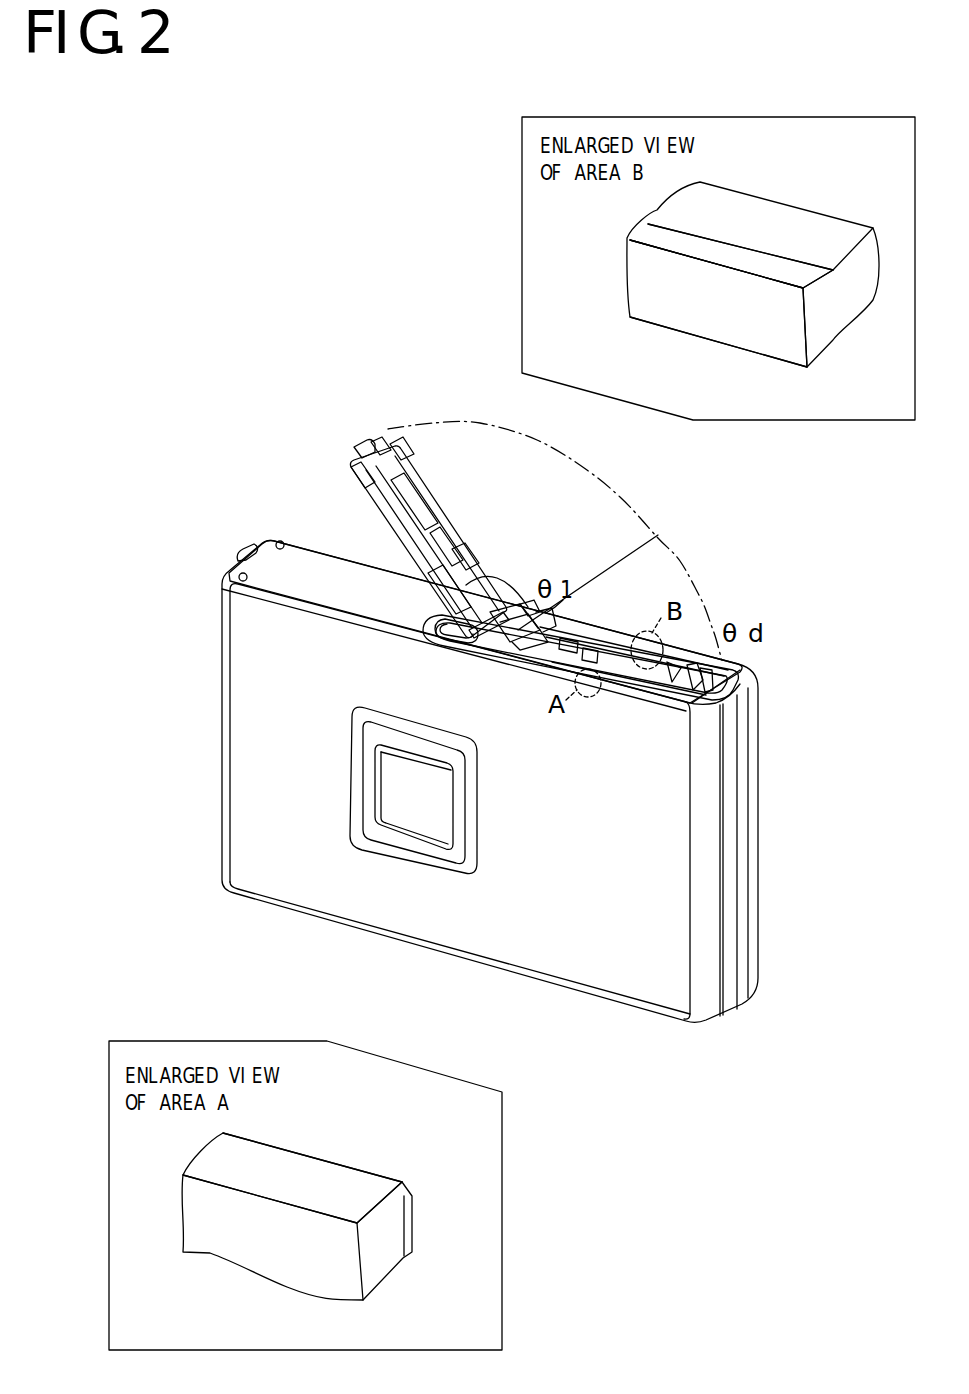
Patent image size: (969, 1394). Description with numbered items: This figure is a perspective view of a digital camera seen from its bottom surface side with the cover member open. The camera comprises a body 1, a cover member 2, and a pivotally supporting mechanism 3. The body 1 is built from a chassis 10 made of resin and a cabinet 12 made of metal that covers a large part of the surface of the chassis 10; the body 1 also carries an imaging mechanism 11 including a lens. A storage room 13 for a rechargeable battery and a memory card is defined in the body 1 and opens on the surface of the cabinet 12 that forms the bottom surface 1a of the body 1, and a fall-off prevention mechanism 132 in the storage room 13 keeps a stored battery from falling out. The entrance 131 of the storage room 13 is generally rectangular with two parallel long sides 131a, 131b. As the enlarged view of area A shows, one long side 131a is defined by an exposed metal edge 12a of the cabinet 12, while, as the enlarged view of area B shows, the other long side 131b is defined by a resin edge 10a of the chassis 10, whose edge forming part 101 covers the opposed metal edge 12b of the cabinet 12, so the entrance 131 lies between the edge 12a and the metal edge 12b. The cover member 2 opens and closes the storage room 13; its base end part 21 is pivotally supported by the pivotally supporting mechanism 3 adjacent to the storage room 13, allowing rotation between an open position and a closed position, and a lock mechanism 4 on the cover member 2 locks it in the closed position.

The body 1 is at (267, 543).
The bottom surface 1a is at (338, 603).
The cover member 2 is at (455, 533).
The pivotally supporting mechanism 3 is at (517, 612).
The lock mechanism 4 is at (361, 447).
The chassis 10 is at (746, 760).
The edge 10a is at (680, 256).
The edge forming part 101 is at (770, 324).
The imaging mechanism 11 is at (413, 812).
The cabinet 12 is at (308, 556).
The edge 12a is at (318, 1158).
The metal edge 12b is at (737, 243).
The storage room 13 is at (688, 687).
The entrance 131 is at (592, 626).
The long side 131a is at (595, 677).
The long side 131b is at (650, 647).
The fall-off prevention mechanism 132 is at (527, 622).
The base end part 21 is at (480, 648).